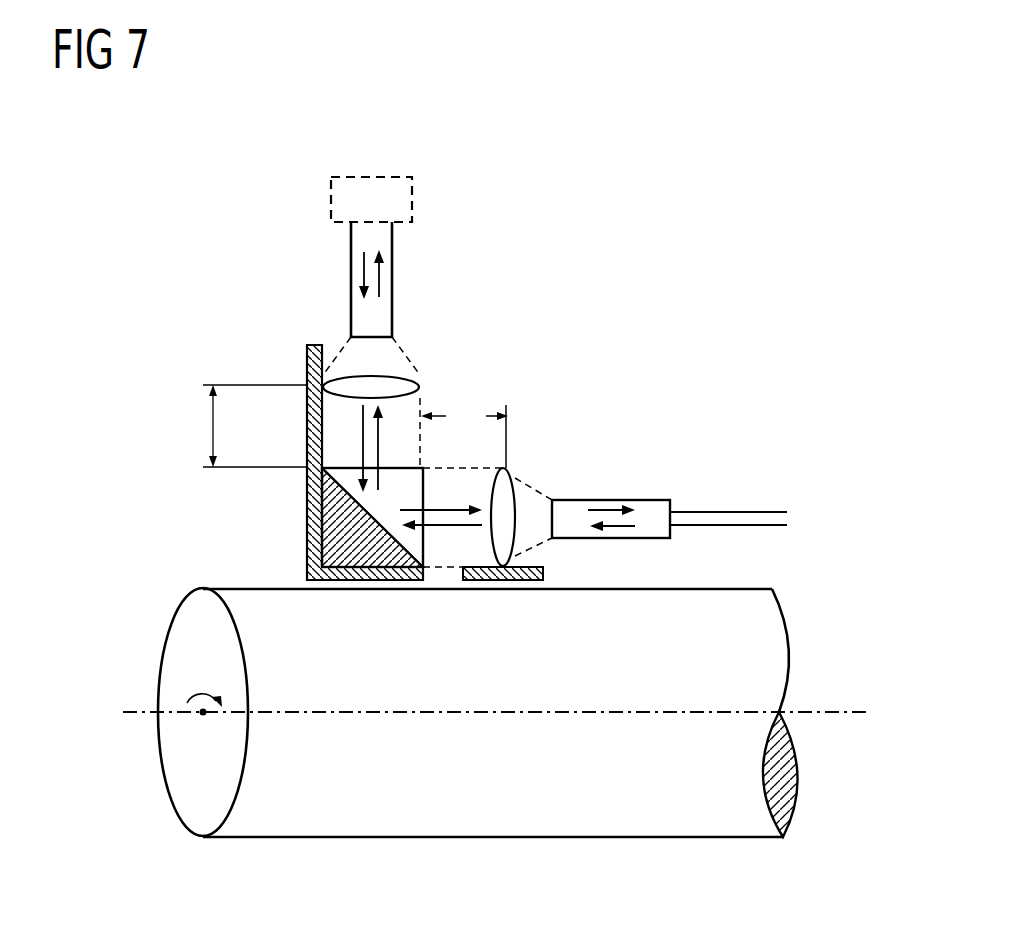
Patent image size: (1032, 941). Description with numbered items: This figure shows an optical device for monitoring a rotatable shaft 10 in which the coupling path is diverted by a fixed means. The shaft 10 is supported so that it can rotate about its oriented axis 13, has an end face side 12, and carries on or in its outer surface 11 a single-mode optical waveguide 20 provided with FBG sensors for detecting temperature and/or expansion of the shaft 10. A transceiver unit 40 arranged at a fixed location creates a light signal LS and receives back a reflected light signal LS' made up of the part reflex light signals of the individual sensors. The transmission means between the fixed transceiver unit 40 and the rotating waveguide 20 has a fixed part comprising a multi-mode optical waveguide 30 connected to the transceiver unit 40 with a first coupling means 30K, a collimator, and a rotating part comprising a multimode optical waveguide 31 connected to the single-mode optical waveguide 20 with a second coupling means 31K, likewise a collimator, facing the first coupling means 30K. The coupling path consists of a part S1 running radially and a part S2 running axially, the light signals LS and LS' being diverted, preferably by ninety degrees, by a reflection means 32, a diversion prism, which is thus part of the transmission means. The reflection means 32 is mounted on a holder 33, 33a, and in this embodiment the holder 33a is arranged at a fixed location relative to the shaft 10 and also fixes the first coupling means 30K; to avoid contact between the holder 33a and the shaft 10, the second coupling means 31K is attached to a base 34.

The transceiver unit 40 is at (372, 177).
The light signal LS is at (326, 275).
The reflected light signal LS' is at (419, 273).
The multi-mode optical waveguide 30 is at (365, 320).
The first coupling means 30K is at (400, 378).
The radially running part of coupling path S1 is at (252, 426).
The axially running part of coupling path S2 is at (464, 484).
The holder 33a is at (307, 512).
The reflection means 32 is at (407, 540).
The holder 33 is at (353, 548).
The support plate 34 is at (508, 580).
The second coupling means 31K is at (510, 470).
The multimode optical waveguide 31 is at (649, 505).
The optical waveguide 20 is at (785, 516).
The shaft 10 is at (265, 837).
The end face side 12 is at (183, 776).
The outer surface 11 is at (524, 838).
The axis 13 is at (827, 712).